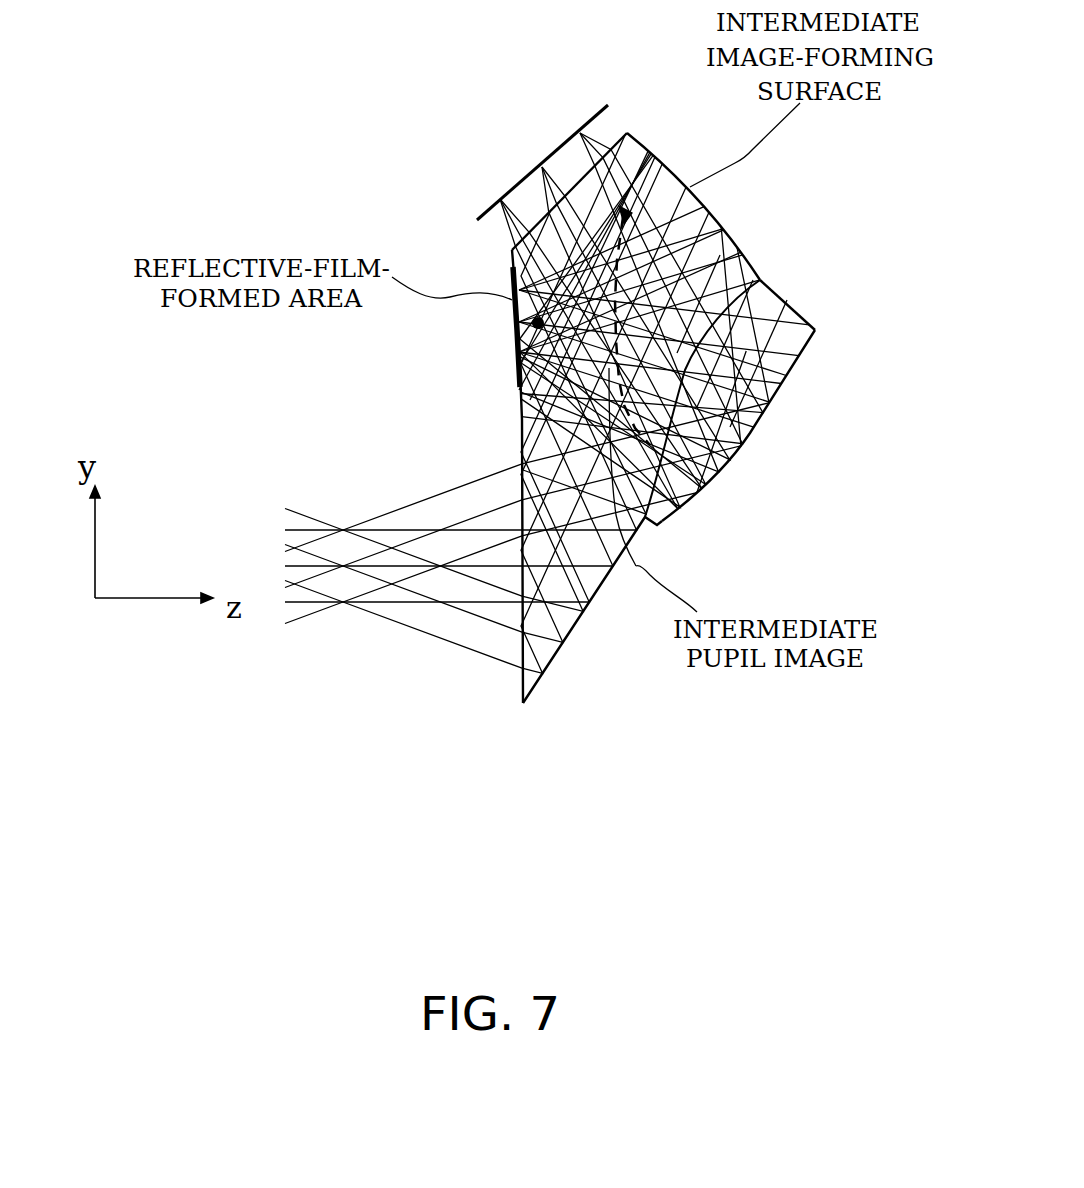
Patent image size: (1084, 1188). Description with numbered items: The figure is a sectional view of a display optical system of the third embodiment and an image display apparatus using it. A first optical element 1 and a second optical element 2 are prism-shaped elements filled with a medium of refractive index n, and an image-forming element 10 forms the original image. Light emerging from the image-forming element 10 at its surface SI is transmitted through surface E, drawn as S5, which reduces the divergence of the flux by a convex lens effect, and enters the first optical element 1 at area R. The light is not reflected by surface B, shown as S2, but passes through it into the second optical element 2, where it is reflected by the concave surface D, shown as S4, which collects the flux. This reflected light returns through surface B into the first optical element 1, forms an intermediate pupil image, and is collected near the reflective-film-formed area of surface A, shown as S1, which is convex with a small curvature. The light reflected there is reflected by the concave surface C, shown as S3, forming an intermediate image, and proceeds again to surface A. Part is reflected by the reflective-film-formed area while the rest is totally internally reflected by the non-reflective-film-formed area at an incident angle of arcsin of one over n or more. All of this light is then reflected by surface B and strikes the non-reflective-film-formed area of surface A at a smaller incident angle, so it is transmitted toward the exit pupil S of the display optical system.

The image-forming element 10 is at (532, 172).
The first optical element 1 is at (591, 464).
The second optical element 2 is at (774, 420).
The surface of the image-forming element SI is at (603, 114).
The area where light enters the first optical element R is at (662, 183).
The exit pupil S is at (342, 522).
The surface A S1 is at (527, 633).
The surface B S2 is at (590, 620).
The surface C S3 is at (690, 186).
The surface D S4 is at (725, 470).
The surface E S5 is at (512, 250).